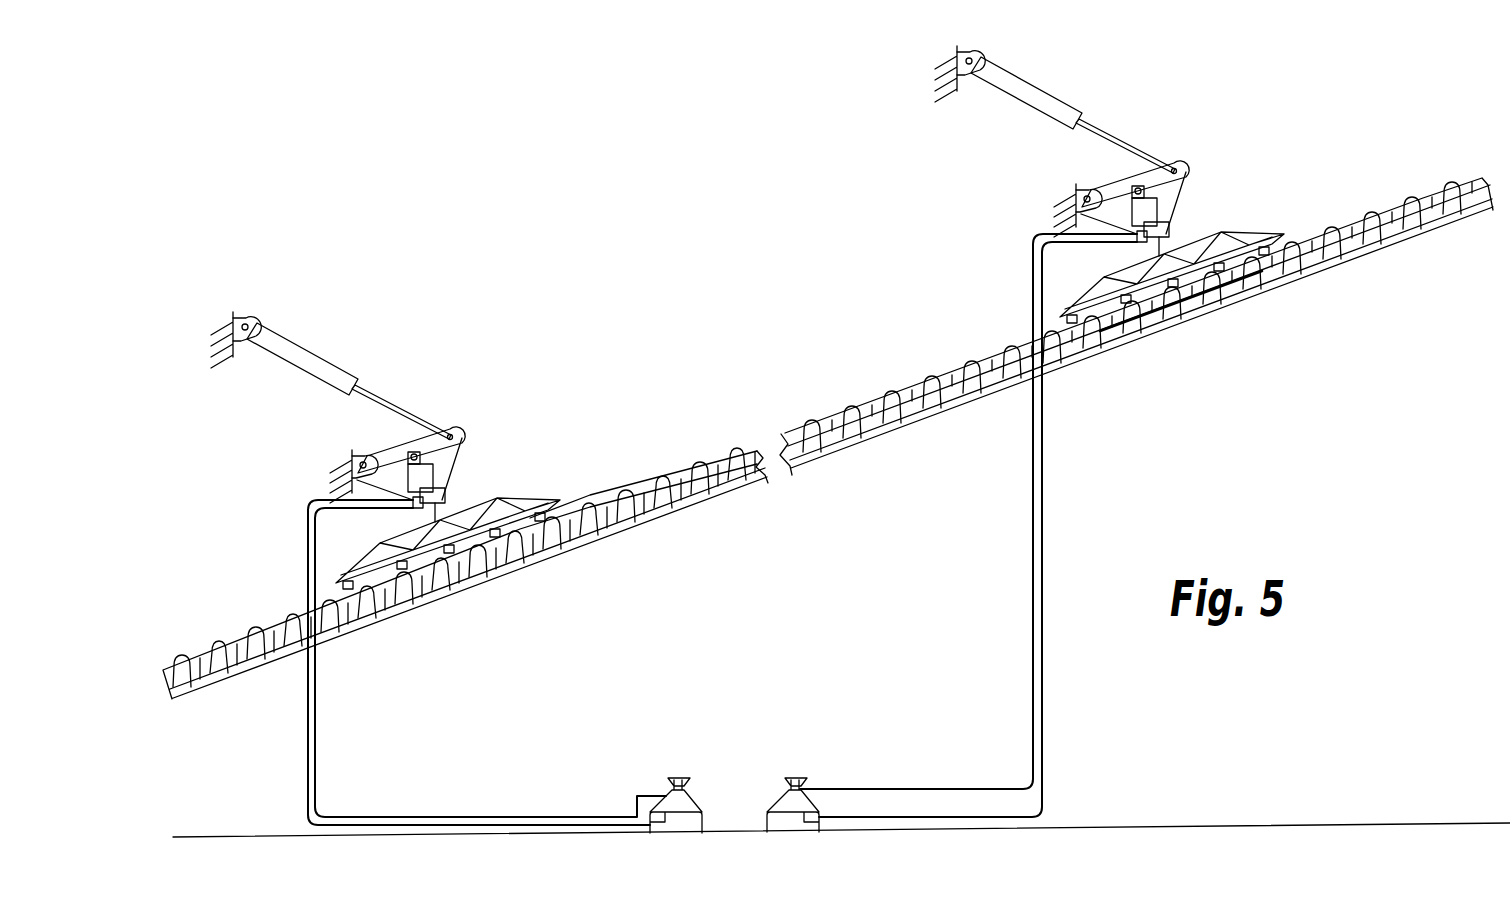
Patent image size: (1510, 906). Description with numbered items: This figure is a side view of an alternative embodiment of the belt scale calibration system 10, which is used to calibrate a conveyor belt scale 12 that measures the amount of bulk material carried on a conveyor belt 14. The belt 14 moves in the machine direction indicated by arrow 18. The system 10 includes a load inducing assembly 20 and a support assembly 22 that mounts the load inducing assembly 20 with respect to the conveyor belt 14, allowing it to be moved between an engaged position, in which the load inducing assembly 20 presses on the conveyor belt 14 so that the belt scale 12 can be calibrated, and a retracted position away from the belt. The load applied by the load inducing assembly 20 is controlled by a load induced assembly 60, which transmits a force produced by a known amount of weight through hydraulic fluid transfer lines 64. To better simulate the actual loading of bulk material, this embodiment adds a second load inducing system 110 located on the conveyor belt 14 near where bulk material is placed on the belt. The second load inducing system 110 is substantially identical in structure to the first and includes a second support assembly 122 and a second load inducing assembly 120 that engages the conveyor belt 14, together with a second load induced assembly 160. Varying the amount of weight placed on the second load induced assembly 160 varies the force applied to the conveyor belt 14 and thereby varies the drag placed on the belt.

The belt scale calibration system 10 is at (1216, 160).
The conveyor belt scale 12 is at (1177, 322).
The conveyor belt 14 is at (544, 569).
The arrow 18 is at (860, 380).
The load inducing assembly 20 is at (1224, 230).
The support assembly 22 is at (1175, 165).
The load induced assembly 60 is at (778, 792).
The hydraulic fluid transfer lines 64 is at (1030, 574).
The second load inducing system 110 is at (540, 418).
The second load inducing assembly 120 is at (504, 494).
The second support assembly 122 is at (452, 432).
The second load induced assembly 160 is at (693, 790).